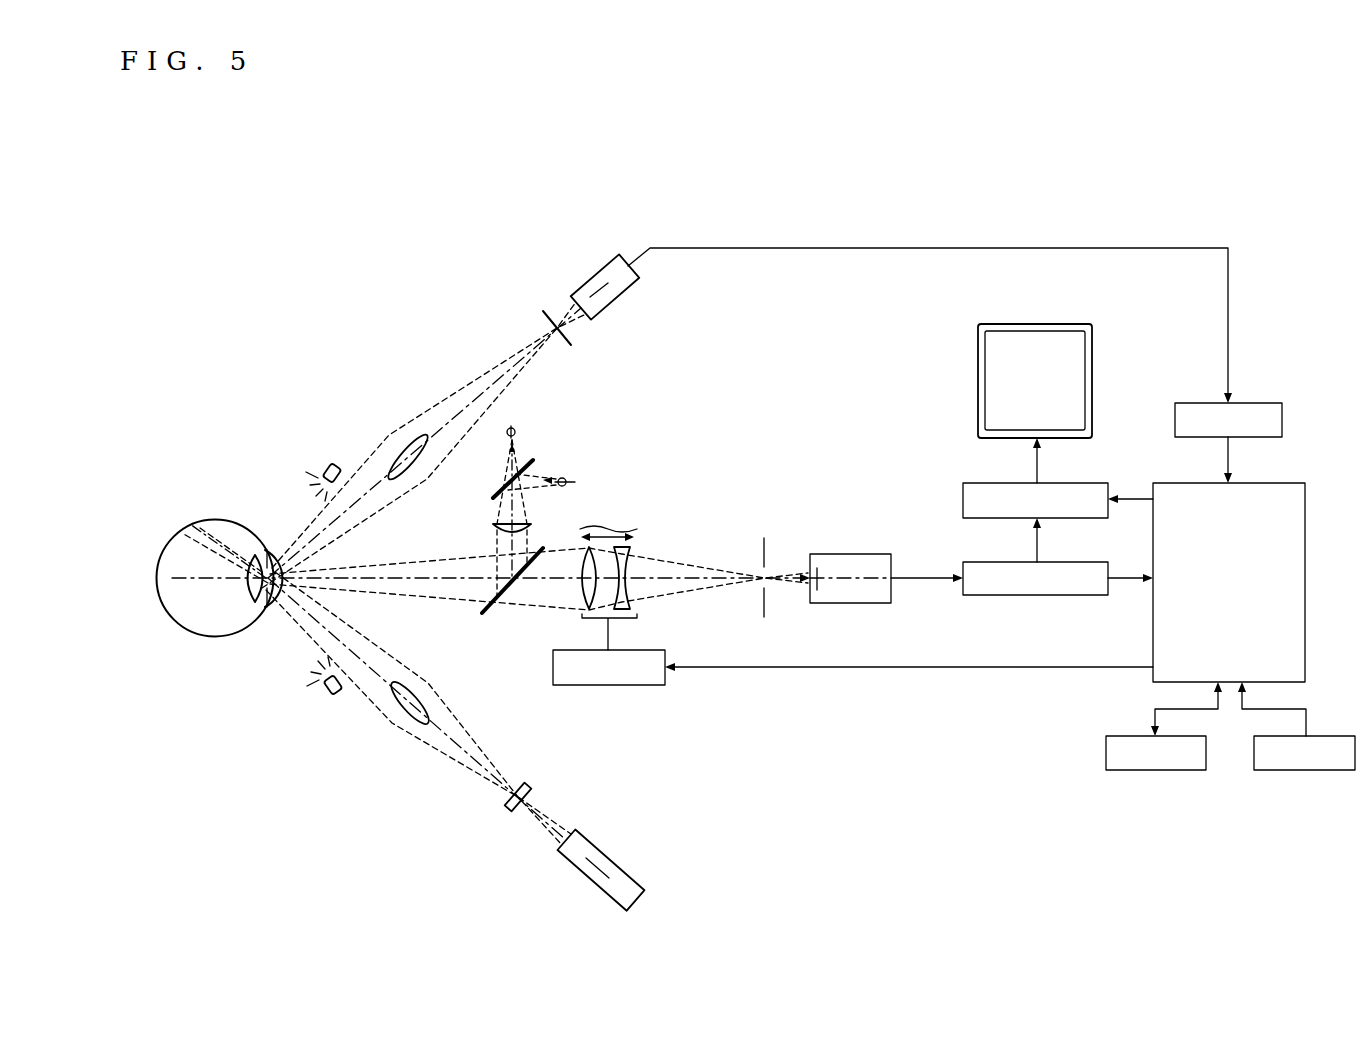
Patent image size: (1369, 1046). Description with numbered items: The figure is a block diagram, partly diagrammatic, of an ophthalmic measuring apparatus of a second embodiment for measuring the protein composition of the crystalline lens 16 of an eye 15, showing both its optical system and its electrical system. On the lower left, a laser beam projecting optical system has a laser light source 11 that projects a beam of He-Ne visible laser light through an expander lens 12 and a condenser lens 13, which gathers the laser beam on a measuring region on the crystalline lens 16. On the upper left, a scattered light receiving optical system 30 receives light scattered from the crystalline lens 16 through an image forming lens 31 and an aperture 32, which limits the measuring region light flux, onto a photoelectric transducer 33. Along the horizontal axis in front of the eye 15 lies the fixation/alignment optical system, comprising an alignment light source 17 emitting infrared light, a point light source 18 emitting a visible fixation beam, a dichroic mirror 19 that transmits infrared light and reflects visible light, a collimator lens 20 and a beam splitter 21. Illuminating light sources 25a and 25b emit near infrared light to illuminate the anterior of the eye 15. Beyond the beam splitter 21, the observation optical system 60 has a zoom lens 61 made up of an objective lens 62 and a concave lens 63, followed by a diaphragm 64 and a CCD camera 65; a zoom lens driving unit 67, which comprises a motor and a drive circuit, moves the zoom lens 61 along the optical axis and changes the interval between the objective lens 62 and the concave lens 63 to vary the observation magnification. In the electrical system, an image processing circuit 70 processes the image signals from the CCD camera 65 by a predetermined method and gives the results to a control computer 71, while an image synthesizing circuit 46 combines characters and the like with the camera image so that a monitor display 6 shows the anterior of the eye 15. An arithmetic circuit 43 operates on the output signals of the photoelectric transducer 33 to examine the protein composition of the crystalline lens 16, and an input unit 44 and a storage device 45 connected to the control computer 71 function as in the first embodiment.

The monitor display 6 is at (980, 360).
The laser light source 11 is at (605, 853).
The expander lens 12 is at (530, 786).
The condenser lens 13 is at (400, 728).
The eye 15 is at (193, 618).
The crystalline lens 16 is at (250, 597).
The alignment light source 17 is at (515, 428).
The point light source 18 is at (566, 478).
The dichroic mirror 19 is at (493, 498).
The collimator lens 20 is at (493, 526).
The beam splitter 21 is at (487, 605).
The illuminating light source 25a is at (330, 465).
The illuminating light source 25b is at (330, 700).
The scattered light receiving optical system 30 is at (479, 419).
The image forming lens 31 is at (394, 435).
The aperture 32 is at (540, 318).
The photoelectric transducer 33 is at (624, 293).
The arithmetic circuit 43 is at (1195, 402).
The input unit 44 is at (1304, 775).
The storage device 45 is at (1150, 775).
The image synthesizing circuit 46 is at (970, 485).
The observation optical system 60 is at (539, 556).
The zoom lens 61 is at (605, 528).
The objective lens 62 is at (582, 595).
The concave lens 63 is at (630, 602).
The diaphragm 64 is at (758, 553).
The CCD camera 65 is at (853, 560).
The zoom lens driving unit 67 is at (640, 685).
The image processing circuit 70 is at (1000, 595).
The control computer 71 is at (1300, 540).